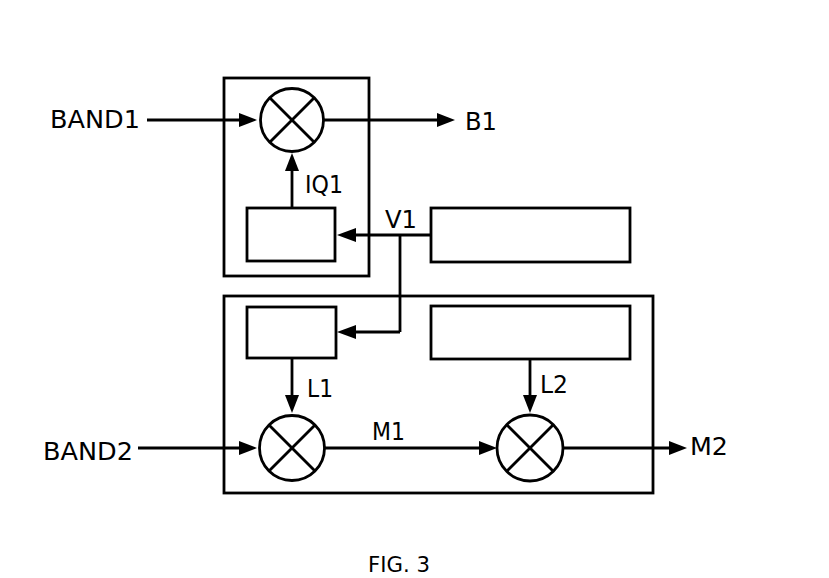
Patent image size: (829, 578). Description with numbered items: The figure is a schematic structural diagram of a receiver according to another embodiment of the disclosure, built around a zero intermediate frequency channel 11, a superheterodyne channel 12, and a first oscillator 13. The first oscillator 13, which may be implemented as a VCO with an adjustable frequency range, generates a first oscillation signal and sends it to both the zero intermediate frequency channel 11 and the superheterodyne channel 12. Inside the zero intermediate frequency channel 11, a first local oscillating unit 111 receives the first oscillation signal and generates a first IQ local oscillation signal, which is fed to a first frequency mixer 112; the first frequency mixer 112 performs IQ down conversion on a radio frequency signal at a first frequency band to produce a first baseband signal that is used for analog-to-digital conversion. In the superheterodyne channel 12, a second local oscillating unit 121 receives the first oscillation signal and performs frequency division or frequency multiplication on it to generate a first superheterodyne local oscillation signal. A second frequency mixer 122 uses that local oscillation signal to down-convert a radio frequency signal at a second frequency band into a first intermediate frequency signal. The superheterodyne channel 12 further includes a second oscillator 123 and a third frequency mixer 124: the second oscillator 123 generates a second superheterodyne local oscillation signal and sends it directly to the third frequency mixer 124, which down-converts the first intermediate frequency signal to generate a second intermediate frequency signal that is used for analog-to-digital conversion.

The zero intermediate frequency channel 11 is at (369, 175).
The first local oscillating unit 111 is at (247, 240).
The first frequency mixer 112 is at (307, 88).
The superheterodyne channel 12 is at (653, 408).
The second local oscillating unit 121 is at (247, 338).
The second frequency mixer 122 is at (310, 475).
The second oscillator 123 is at (630, 330).
The third frequency mixer 124 is at (552, 475).
The first oscillator 13 is at (630, 232).